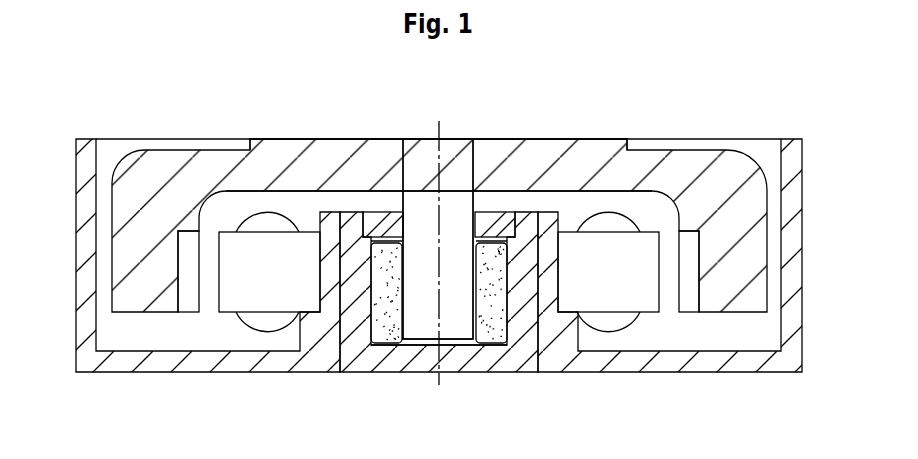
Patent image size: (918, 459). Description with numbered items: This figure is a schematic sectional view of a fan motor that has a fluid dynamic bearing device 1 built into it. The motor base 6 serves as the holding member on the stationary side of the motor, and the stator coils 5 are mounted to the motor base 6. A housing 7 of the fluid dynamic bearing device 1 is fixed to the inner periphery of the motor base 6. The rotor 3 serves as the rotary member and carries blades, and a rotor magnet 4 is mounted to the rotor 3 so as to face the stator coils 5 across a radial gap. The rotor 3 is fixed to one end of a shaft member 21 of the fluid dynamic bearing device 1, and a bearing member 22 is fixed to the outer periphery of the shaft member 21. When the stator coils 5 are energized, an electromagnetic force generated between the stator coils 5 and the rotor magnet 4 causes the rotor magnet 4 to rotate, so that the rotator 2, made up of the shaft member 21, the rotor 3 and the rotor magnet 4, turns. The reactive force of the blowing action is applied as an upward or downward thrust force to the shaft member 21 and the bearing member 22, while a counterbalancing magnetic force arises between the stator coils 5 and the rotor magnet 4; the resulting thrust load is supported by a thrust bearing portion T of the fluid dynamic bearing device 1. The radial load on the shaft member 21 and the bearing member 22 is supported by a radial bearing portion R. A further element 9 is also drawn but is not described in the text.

The fluid dynamic bearing device 1 is at (515, 203).
The rotator 2 is at (456, 139).
The rotor 3 is at (682, 167).
The rotor magnet 4 is at (687, 298).
The stator coils 5 is at (650, 302).
The motor base 6 is at (562, 355).
The housing 7 is at (500, 367).
The retaining ring 9 is at (380, 212).
The shaft member 21 is at (425, 163).
The bearing member 22 is at (487, 318).
The radial bearing portion R is at (366, 265).
The thrust bearing portion T is at (388, 346).